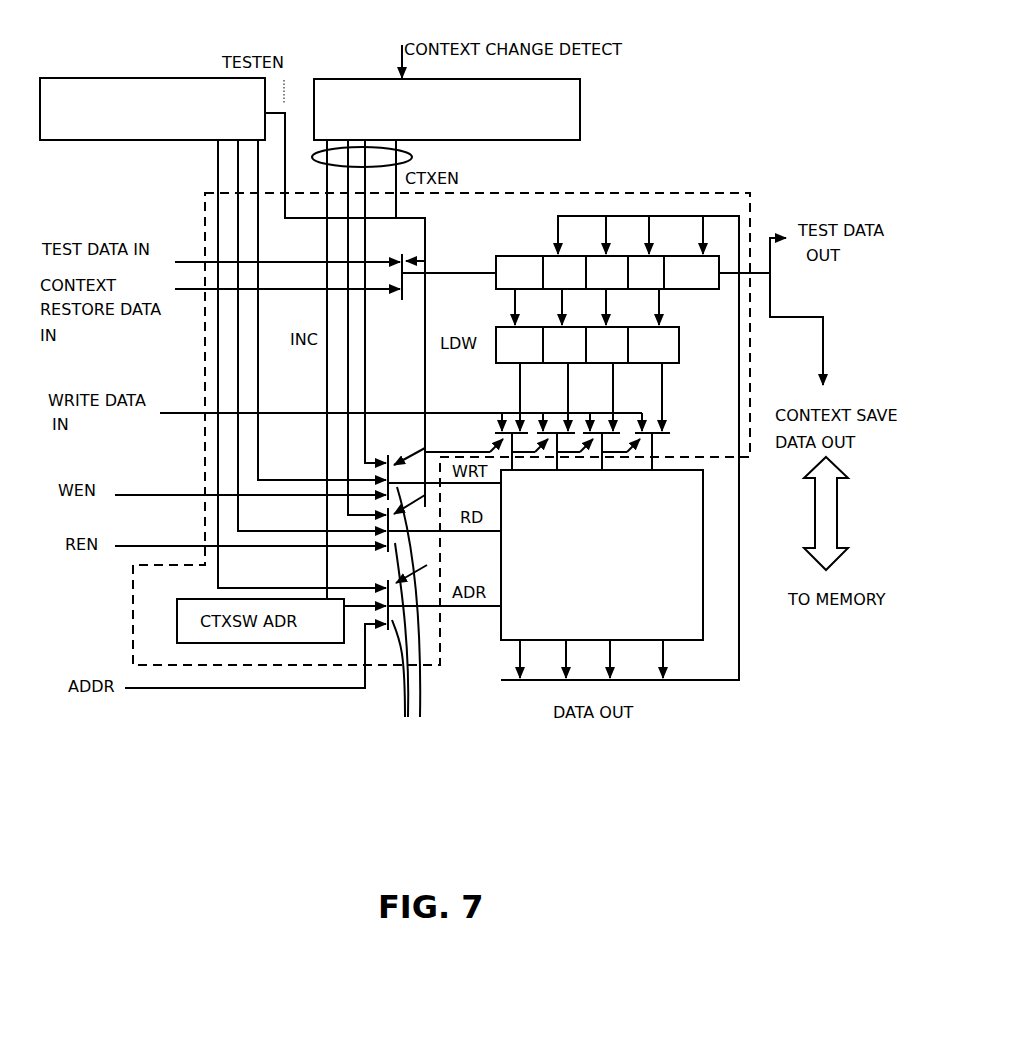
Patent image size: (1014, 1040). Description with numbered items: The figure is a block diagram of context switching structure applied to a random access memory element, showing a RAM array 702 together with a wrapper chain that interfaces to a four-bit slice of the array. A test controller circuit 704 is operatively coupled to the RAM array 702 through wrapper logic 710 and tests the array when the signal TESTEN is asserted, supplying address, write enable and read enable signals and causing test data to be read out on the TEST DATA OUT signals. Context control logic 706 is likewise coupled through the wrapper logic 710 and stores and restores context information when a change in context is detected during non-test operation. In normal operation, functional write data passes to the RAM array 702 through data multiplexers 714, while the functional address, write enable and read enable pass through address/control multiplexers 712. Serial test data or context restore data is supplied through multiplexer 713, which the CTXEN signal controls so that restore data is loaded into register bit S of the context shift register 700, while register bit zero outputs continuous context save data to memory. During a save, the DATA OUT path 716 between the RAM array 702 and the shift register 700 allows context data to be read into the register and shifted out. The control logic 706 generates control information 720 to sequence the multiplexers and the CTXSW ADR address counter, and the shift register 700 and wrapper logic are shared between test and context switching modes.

The context shift register 700 is at (535, 256).
The RAM array 702 is at (498, 623).
The test controller circuit 704 is at (148, 140).
The context control logic 706 is at (580, 88).
The wrapper logic 710 is at (684, 181).
The address/control multiplexers 712 is at (410, 616).
The multiplexer 713 is at (410, 286).
The data multiplexers 714 is at (682, 437).
The DATA OUT path 716 is at (739, 605).
The control information 720 is at (412, 157).